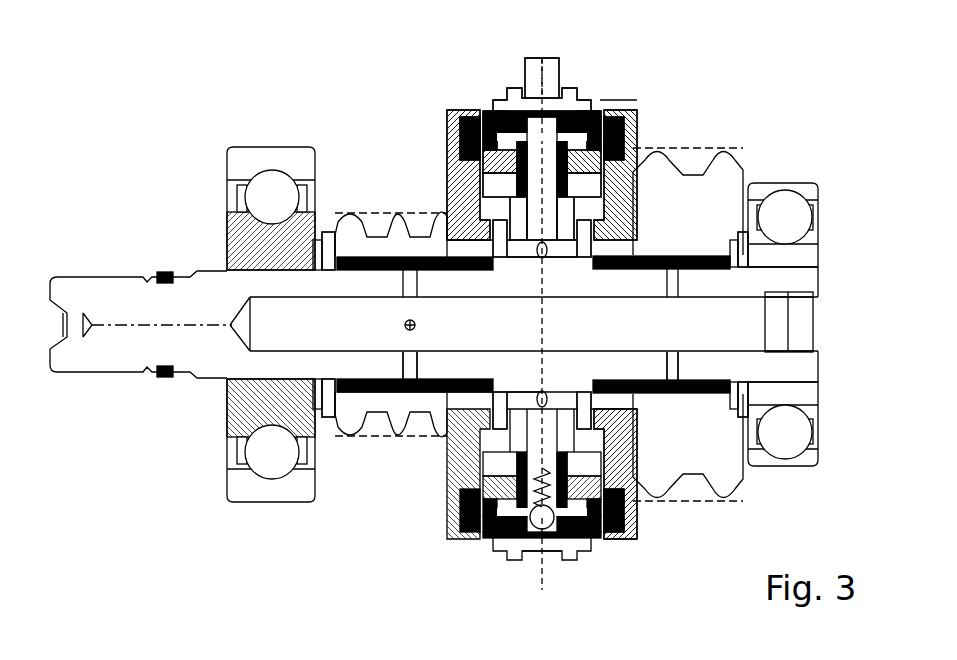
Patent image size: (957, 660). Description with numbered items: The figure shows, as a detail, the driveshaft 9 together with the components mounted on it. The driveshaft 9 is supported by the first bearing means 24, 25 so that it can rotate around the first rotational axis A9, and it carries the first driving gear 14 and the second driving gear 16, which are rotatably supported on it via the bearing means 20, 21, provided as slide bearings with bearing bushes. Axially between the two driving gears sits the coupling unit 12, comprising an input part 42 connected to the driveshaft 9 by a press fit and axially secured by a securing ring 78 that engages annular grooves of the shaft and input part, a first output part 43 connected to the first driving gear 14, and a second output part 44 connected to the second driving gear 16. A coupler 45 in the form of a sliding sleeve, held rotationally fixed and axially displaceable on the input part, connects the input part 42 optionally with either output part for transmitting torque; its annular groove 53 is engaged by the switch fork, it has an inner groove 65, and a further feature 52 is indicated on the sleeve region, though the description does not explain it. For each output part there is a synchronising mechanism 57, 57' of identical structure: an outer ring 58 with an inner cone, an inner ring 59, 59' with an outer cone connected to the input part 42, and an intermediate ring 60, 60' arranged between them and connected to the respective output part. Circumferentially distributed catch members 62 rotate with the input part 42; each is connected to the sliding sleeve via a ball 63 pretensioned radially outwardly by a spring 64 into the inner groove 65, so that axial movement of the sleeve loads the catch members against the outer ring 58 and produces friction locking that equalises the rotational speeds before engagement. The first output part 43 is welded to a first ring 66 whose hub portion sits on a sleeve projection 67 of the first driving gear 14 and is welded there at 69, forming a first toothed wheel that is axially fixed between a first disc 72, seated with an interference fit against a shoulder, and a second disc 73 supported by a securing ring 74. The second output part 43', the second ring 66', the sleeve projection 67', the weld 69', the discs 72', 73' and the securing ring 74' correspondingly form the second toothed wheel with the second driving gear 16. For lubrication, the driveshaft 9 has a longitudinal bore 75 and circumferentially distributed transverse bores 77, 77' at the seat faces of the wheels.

The driveshaft 9 is at (185, 288).
The first rotational axis A9 is at (118, 322).
The coupling unit 12 is at (500, 72).
The first driving gear 14 is at (352, 215).
The second driving gear 16 is at (725, 150).
The bearing means 20 is at (358, 440).
The bearing means 21 is at (720, 470).
The first bearing means 24 is at (218, 167).
The first bearing means 25 is at (800, 183).
The input part 42 is at (560, 225).
The first output part 43 is at (458, 80).
The second output part 43' is at (589, 80).
The second output part 44 is at (635, 105).
The coupler 45 is at (585, 105).
The bore 52 is at (555, 65).
The annular groove 53 is at (548, 62).
The synchronising mechanism 57 is at (537, 508).
The synchronising mechanism 57' is at (615, 517).
The outer ring 58 is at (490, 100).
The inner ring 59 is at (434, 175).
The inner ring 59' is at (646, 175).
The intermediate ring 60 is at (512, 228).
The intermediate ring 60' is at (604, 152).
The catch members 62 is at (558, 550).
The ball 63 is at (572, 530).
The spring 64 is at (527, 522).
The inner groove 65 is at (542, 530).
The first ring 66 is at (423, 122).
The second ring 66' is at (659, 122).
The sleeve projection 67 is at (470, 290).
The sleeve projection 67' is at (646, 476).
The weld 69 is at (524, 376).
The weld 69' is at (629, 343).
The first disc 72 is at (422, 343).
The first disc 72' is at (653, 342).
The second disc 73 is at (343, 324).
The second disc 73' is at (776, 367).
The securing ring 74 is at (316, 324).
The securing ring 74' is at (798, 324).
The longitudinal bore 75 is at (745, 300).
The transverse bore 77 is at (415, 428).
The transverse bore 77' is at (698, 345).
The securing ring 78 is at (545, 258).